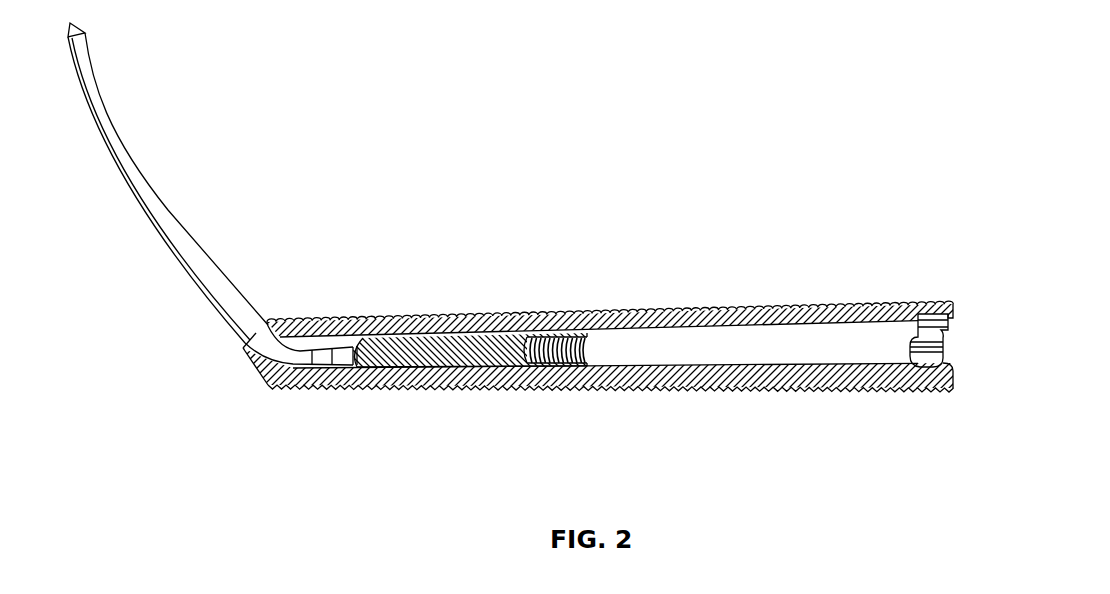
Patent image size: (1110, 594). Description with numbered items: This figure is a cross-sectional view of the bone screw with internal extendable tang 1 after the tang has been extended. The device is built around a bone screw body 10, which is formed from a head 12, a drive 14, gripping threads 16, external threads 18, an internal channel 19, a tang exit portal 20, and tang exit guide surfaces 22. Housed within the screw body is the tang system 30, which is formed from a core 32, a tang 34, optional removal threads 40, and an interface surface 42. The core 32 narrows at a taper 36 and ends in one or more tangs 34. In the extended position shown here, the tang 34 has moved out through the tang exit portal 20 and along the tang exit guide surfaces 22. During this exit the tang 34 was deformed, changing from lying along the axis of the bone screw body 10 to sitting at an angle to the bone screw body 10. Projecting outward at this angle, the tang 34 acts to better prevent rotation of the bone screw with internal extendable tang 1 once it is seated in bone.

The bone screw with internal extendable tang 1 is at (868, 75).
The bone screw body 10 is at (682, 318).
The head 12 is at (955, 308).
The drive 14 is at (955, 367).
The gripping threads 16 is at (925, 305).
The external threads 18 is at (538, 320).
The internal channel 19 is at (710, 348).
The tang exit portal 20 is at (263, 332).
The tang exit guide surfaces 22 is at (245, 352).
The tang system 30 is at (450, 348).
The core 32 is at (493, 348).
The tang 34 is at (152, 191).
The taper 36 is at (363, 347).
The removal threads 40 is at (588, 363).
The interface surface 42 is at (578, 340).